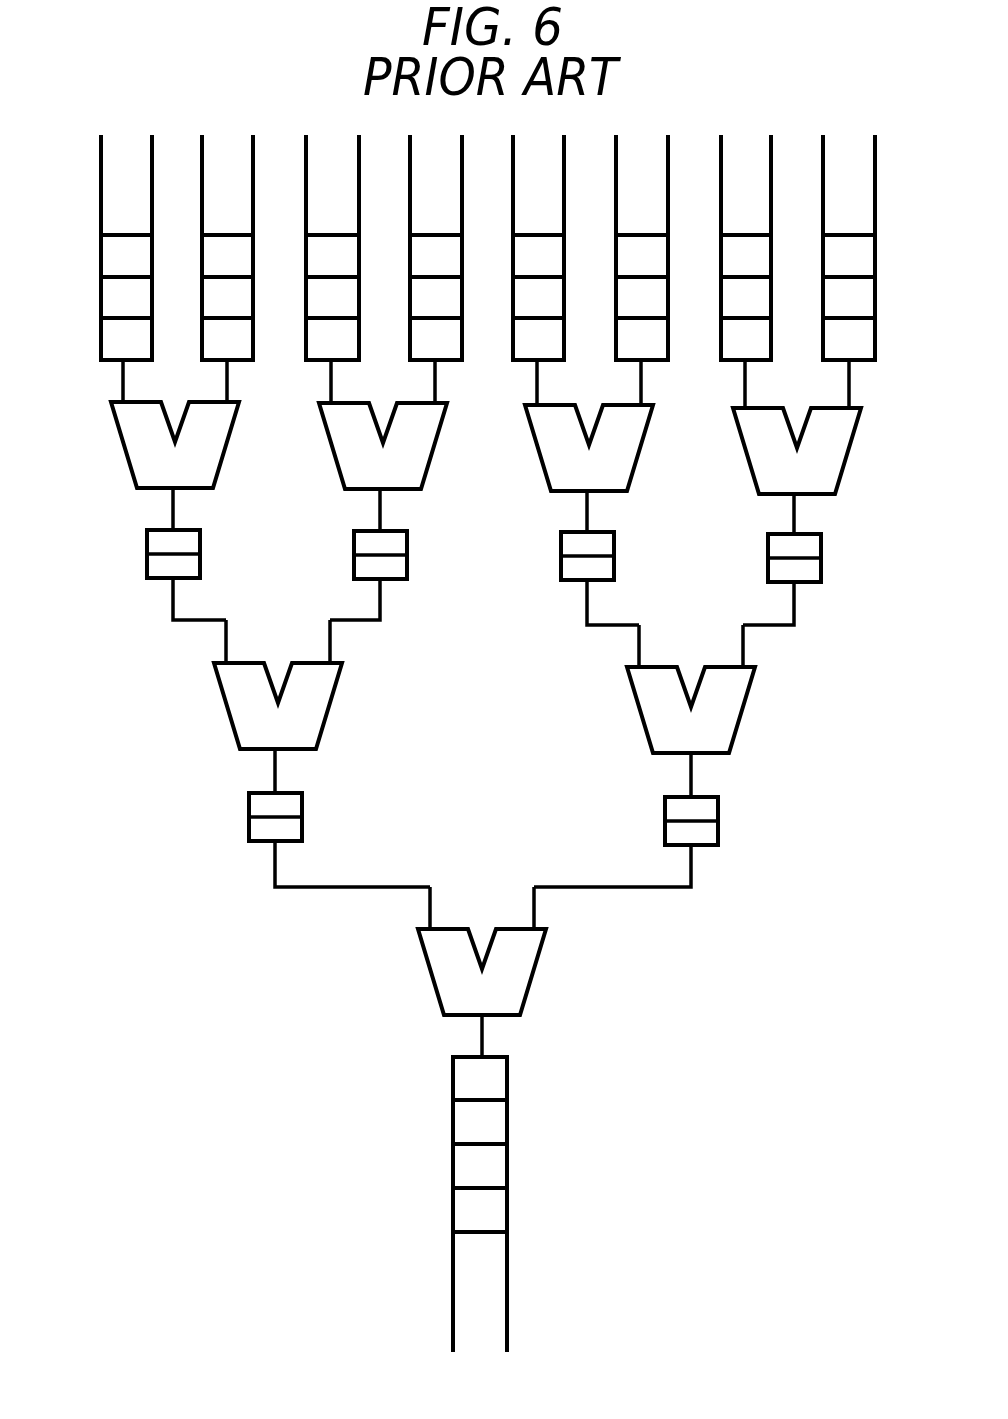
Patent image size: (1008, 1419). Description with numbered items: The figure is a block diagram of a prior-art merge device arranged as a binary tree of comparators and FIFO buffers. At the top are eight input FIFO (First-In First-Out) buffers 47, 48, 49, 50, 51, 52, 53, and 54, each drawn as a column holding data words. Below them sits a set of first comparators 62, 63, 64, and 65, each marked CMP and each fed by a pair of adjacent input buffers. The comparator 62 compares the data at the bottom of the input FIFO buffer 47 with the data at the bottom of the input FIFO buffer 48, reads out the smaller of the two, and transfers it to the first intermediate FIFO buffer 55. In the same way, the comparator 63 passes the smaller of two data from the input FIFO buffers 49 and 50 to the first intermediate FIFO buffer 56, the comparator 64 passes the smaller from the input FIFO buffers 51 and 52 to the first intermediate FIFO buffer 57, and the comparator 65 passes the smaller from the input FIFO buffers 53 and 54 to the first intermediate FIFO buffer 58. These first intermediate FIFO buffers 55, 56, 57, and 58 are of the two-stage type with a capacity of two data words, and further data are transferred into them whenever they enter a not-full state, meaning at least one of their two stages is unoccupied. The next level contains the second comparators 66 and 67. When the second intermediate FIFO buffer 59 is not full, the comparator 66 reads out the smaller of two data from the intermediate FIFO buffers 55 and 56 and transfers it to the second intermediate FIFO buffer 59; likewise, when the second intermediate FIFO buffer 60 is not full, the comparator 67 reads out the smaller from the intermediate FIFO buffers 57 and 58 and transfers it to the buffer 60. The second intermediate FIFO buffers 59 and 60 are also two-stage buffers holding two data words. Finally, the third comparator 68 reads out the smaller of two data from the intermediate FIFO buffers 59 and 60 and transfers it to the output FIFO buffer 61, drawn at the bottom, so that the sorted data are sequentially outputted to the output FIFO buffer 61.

The input FIFO buffer 47 is at (101, 332).
The input FIFO buffer 48 is at (202, 340).
The input FIFO buffer 49 is at (306, 332).
The input FIFO buffer 50 is at (410, 340).
The input FIFO buffer 51 is at (513, 332).
The input FIFO buffer 52 is at (616, 340).
The input FIFO buffer 53 is at (721, 332).
The input FIFO buffer 54 is at (823, 342).
The first intermediate FIFO buffer 55 is at (200, 535).
The first intermediate FIFO buffer 56 is at (407, 536).
The first intermediate FIFO buffer 57 is at (614, 537).
The first intermediate FIFO buffer 58 is at (821, 540).
The second intermediate FIFO buffer 59 is at (302, 798).
The second intermediate FIFO buffer 60 is at (718, 802).
The output FIFO buffer 61 is at (507, 1066).
The first comparator 62 is at (238, 405).
The first comparator 63 is at (447, 407).
The first comparator 64 is at (653, 410).
The first comparator 65 is at (861, 412).
The second comparator 66 is at (342, 668).
The second comparator 67 is at (755, 672).
The third comparator 68 is at (546, 935).